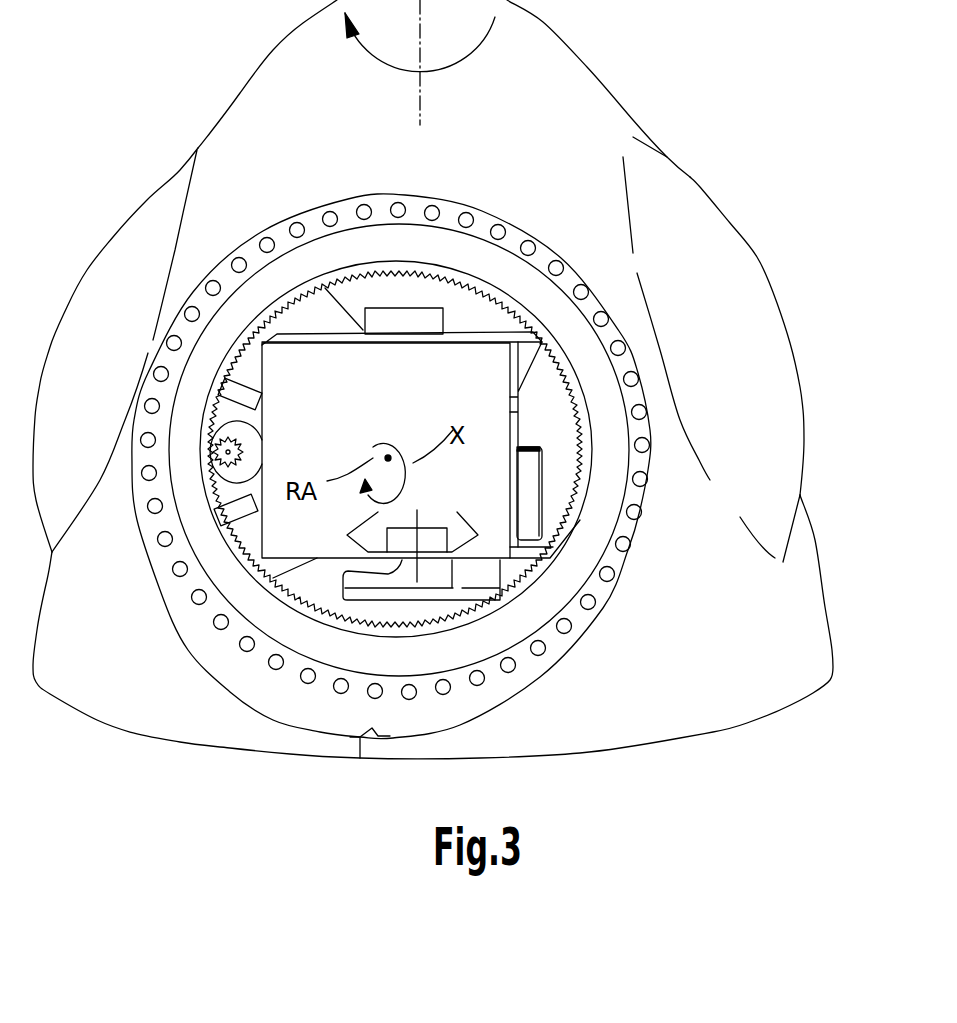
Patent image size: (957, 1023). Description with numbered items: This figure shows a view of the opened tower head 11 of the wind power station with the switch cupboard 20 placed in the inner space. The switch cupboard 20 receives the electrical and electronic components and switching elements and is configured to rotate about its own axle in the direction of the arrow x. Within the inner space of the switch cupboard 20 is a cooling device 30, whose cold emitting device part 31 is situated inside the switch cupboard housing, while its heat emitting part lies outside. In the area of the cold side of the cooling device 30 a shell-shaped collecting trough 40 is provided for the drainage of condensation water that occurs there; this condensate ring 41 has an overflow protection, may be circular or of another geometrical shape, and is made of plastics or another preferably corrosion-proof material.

The tower head 11 is at (718, 633).
The switch cupboard 20 is at (405, 420).
The cooling device 30 is at (423, 537).
The cold emitting device part 31 is at (588, 464).
The collecting trough 40 is at (470, 521).
The condensate ring 41 is at (622, 493).